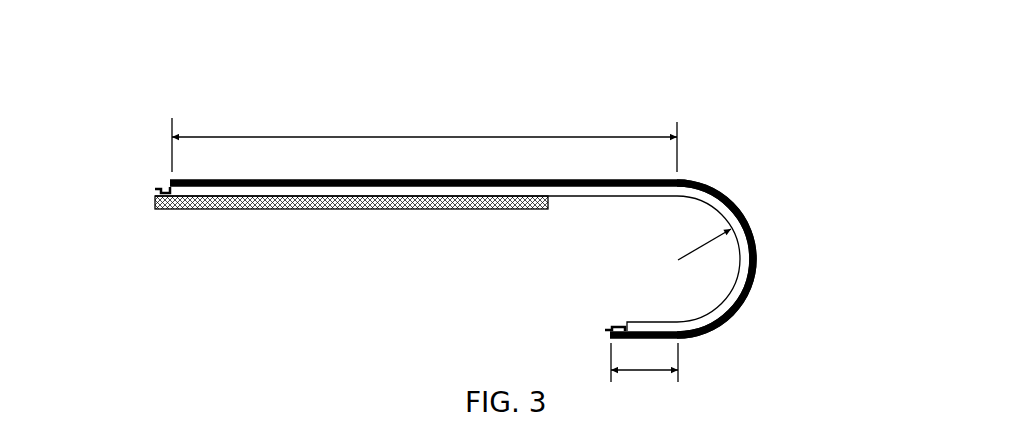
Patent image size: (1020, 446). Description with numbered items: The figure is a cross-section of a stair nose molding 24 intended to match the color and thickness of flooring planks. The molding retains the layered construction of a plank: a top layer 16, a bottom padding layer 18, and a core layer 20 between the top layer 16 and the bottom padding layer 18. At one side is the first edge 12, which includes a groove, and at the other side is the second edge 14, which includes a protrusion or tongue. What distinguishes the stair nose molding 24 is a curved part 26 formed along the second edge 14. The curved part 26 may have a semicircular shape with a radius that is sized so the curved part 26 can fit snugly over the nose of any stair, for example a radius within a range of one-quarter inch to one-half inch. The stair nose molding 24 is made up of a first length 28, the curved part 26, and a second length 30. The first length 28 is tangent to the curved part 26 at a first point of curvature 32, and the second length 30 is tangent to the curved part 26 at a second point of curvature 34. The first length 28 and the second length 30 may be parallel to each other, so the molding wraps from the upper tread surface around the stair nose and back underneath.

The first edge 12 is at (157, 188).
The second edge 14 is at (612, 337).
The top layer 16 is at (223, 179).
The bottom padding layer 18 is at (343, 210).
The core layer 20 is at (618, 197).
The stair nose molding 24 is at (125, 102).
The curved part 26 is at (758, 259).
The first length 28 is at (424, 142).
The second length 30 is at (644, 374).
The first point of curvature 32 is at (680, 197).
The second point of curvature 34 is at (678, 321).